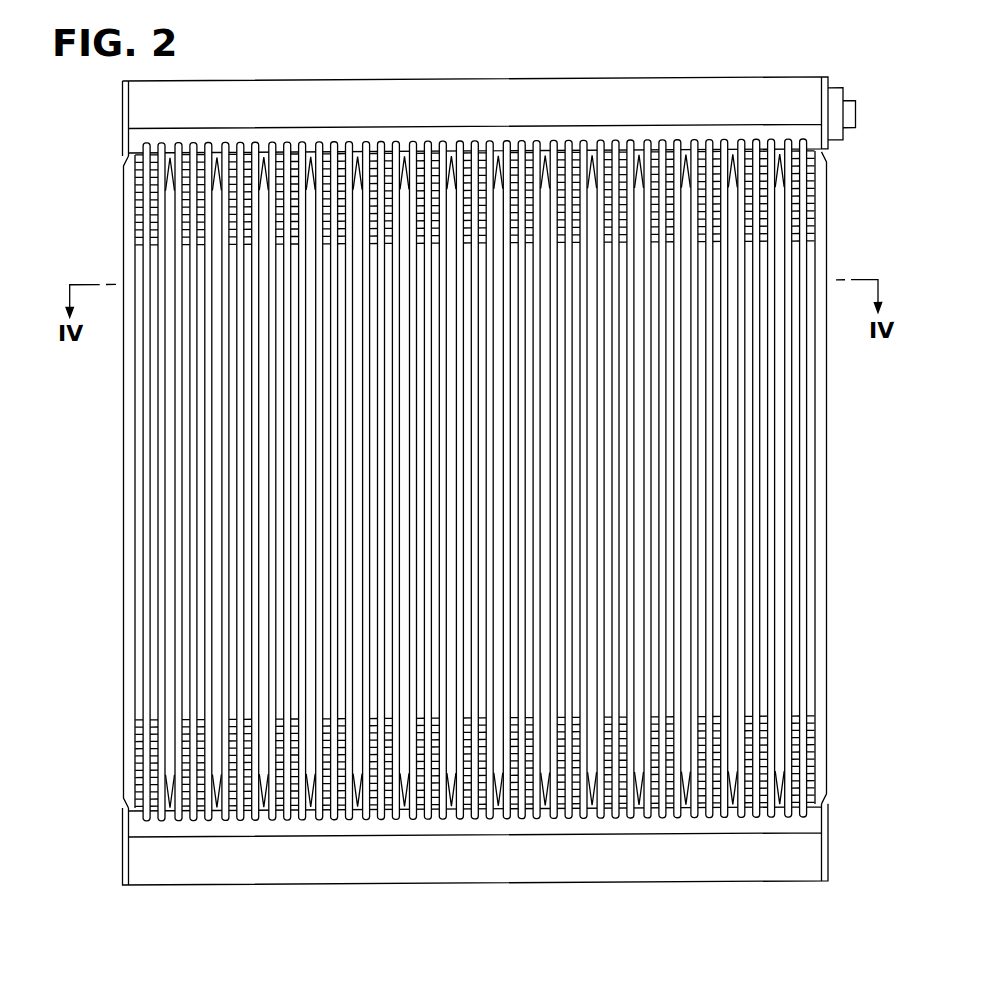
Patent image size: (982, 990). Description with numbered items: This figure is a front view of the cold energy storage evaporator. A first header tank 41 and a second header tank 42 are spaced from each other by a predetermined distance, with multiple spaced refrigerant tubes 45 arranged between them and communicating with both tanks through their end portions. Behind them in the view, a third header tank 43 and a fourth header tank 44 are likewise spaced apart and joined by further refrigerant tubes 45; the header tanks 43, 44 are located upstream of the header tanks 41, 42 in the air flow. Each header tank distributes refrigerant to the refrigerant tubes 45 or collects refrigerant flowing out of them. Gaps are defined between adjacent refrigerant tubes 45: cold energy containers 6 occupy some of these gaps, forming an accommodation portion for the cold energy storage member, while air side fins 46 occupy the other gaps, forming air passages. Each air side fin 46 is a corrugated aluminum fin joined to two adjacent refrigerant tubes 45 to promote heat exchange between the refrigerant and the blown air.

The cold energy container 6 is at (772, 507).
The first header tank 41 is at (489, 84).
The third header tank 43 is at (422, 73).
The second header tank 42 is at (476, 867).
The fourth header tank 44 is at (503, 856).
The refrigerant tube 45 is at (782, 564).
The air side fin 46 is at (787, 711).